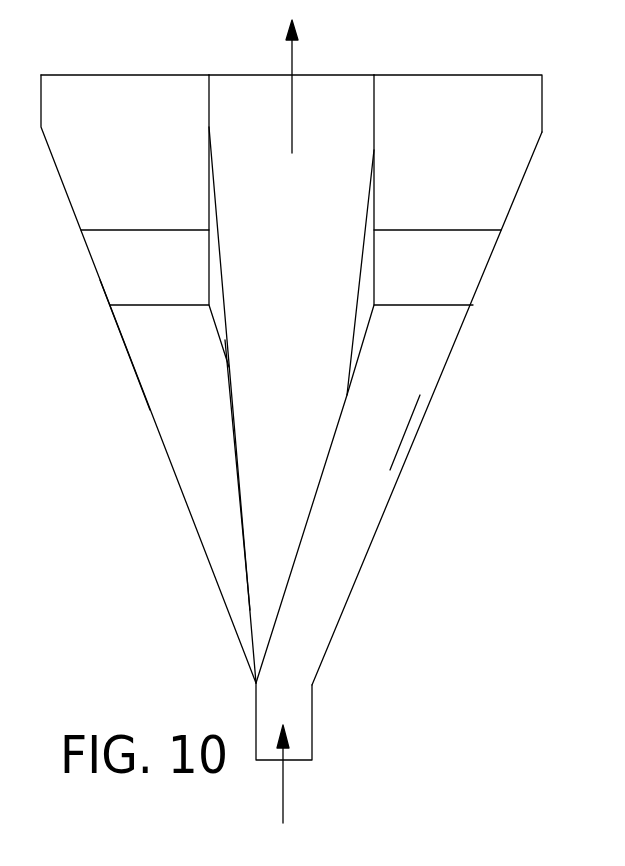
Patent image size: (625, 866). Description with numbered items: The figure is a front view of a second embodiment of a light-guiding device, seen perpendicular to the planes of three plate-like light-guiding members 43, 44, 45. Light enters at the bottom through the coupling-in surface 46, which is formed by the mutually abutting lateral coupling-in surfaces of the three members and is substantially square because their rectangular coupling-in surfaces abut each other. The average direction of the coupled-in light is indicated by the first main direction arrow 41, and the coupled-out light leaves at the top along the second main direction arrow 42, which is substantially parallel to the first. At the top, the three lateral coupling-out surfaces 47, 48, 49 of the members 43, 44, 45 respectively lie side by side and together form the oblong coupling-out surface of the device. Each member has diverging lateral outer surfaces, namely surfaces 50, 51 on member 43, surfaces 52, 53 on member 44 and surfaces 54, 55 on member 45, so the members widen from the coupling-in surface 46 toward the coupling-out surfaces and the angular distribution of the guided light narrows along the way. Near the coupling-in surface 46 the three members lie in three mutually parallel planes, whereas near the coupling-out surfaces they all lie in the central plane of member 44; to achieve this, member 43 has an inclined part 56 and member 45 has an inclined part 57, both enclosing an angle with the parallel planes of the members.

The arrow indicating first main direction 41 is at (283, 805).
The arrow indicating second main direction 42 is at (290, 63).
The plate-like light-guiding member 43 is at (386, 458).
The plate-like light-guiding member 44 is at (258, 500).
The plate-like light-guiding member 45 is at (145, 385).
The coupling-in surface 46 is at (305, 760).
The lateral coupling-out surface 47 is at (461, 73).
The lateral coupling-out surface 48 is at (368, 73).
The lateral coupling-out surface 49 is at (113, 73).
The diverging lateral outer surface 50 is at (383, 520).
The diverging lateral outer surface 51 is at (360, 340).
The diverging lateral outer surface 52 is at (360, 262).
The diverging lateral outer surface 53 is at (222, 252).
The diverging lateral outer surface 54 is at (215, 328).
The diverging lateral outer surface 55 is at (156, 438).
The inclined part 56 is at (473, 240).
The inclined part 57 is at (110, 277).